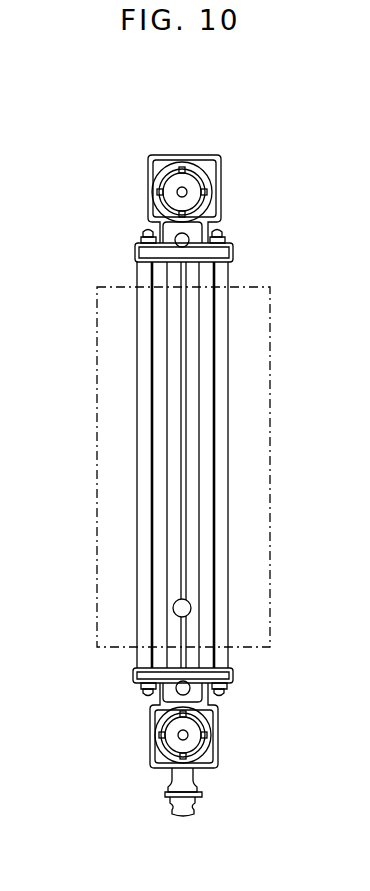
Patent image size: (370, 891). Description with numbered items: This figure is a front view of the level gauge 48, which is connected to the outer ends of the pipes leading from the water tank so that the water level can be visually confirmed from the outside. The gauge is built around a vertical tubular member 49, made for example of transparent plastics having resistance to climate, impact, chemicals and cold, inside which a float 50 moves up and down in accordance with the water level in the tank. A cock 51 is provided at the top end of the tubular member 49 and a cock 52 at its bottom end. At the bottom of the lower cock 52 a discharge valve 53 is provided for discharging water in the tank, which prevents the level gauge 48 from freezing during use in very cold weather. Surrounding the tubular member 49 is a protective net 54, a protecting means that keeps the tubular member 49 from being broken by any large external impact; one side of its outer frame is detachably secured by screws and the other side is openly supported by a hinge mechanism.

The level gauge 48 is at (158, 448).
The tubular member 49 is at (172, 543).
The float 50 is at (173, 610).
The cock 51 is at (197, 185).
The cock 52 is at (200, 727).
The discharge valve 53 is at (194, 805).
The protective net 54 is at (97, 338).